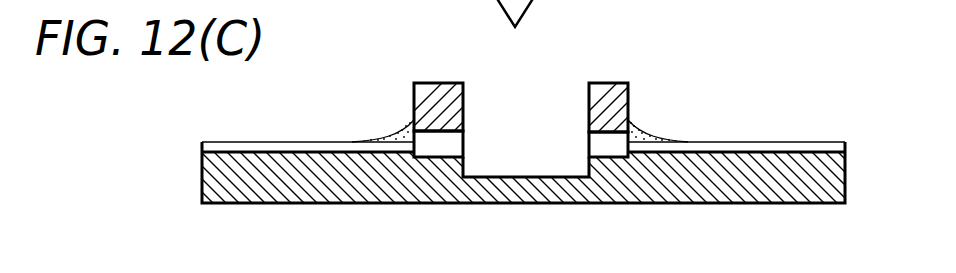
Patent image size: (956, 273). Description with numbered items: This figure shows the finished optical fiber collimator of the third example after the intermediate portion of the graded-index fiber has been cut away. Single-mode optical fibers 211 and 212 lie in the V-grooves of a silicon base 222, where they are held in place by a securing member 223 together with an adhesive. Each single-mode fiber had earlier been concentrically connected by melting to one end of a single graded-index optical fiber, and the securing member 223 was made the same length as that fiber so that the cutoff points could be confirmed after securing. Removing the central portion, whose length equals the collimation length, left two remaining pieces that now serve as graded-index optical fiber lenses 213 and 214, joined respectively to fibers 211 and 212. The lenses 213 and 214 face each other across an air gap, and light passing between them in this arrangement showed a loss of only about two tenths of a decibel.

The single-mode optical fiber 211 is at (298, 142).
The single-mode optical fiber 212 is at (757, 143).
The graded-index optical fiber lens 213 is at (455, 146).
The graded-index optical fiber lens 214 is at (593, 145).
The silicon base 222 is at (758, 190).
The securing member 223 is at (430, 83).